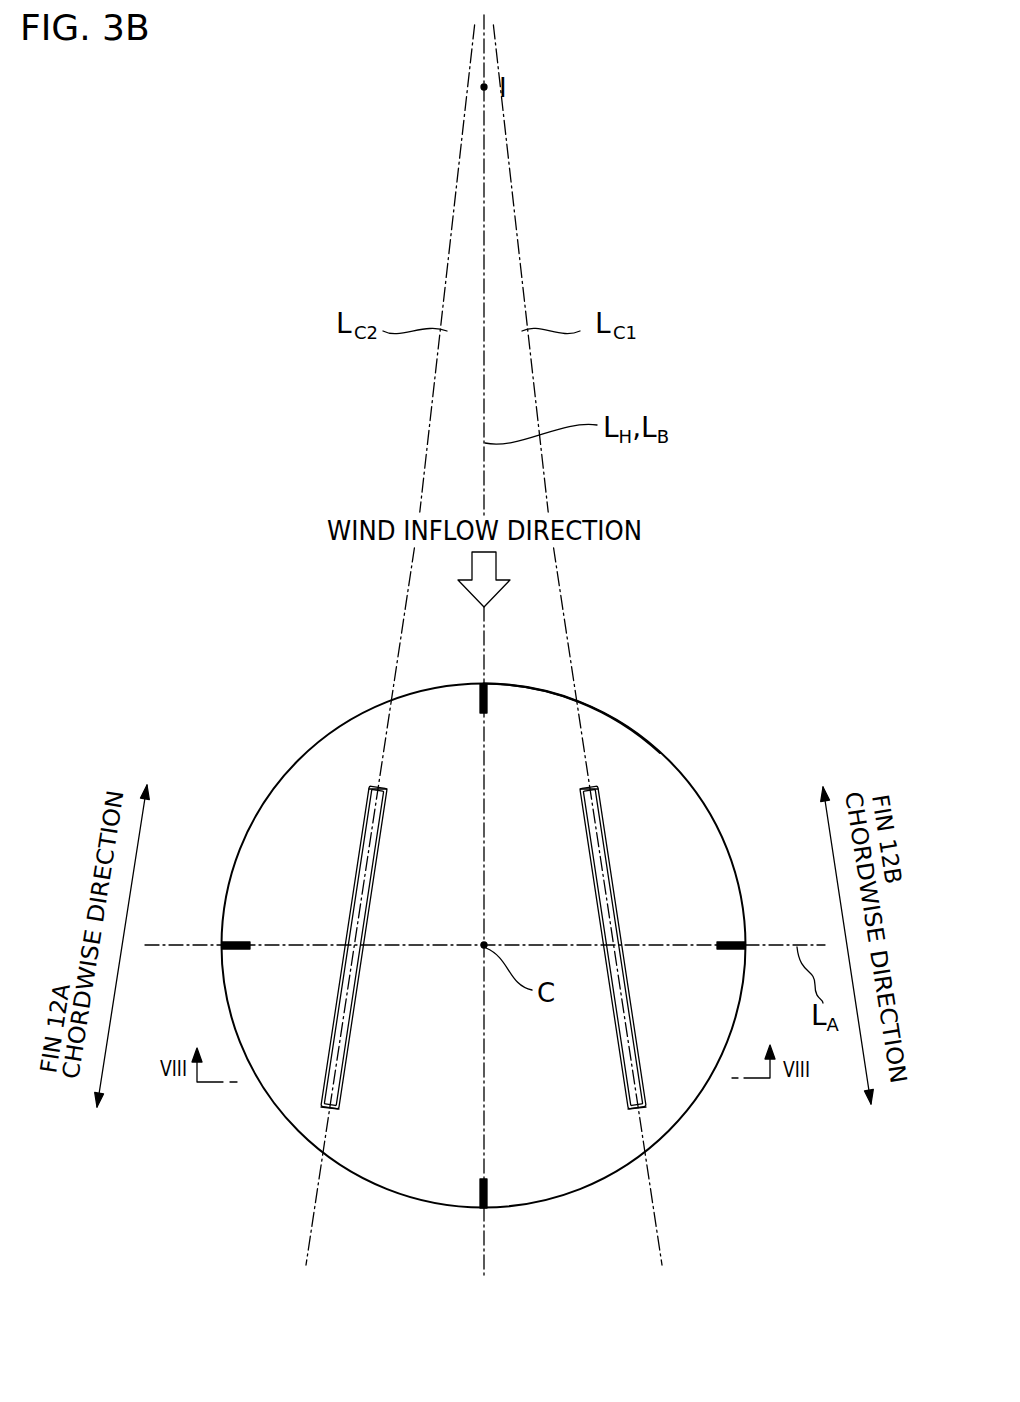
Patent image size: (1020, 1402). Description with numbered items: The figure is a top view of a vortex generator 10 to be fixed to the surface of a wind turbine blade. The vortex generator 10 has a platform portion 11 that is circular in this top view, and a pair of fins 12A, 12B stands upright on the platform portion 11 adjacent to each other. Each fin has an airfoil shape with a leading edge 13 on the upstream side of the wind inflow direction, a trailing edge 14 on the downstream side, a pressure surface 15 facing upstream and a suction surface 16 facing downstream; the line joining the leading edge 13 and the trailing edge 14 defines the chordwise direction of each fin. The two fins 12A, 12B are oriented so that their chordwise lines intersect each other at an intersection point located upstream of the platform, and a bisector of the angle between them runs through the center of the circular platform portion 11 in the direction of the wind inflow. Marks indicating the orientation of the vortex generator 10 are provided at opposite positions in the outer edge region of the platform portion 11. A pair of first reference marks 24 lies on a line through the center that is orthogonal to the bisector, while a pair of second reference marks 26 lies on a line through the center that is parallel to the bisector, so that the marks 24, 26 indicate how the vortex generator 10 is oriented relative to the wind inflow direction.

The vortex generator 10 is at (715, 688).
The platform portion 11 is at (539, 718).
The fin 12A is at (362, 828).
The fin 12B is at (605, 828).
The leading edge 13 is at (374, 790).
The trailing edge 14 is at (322, 1112).
The pressure surface 15 is at (323, 1063).
The suction surface 16 is at (344, 1062).
The first reference mark 24 is at (778, 862).
The second reference mark 26 is at (479, 702).